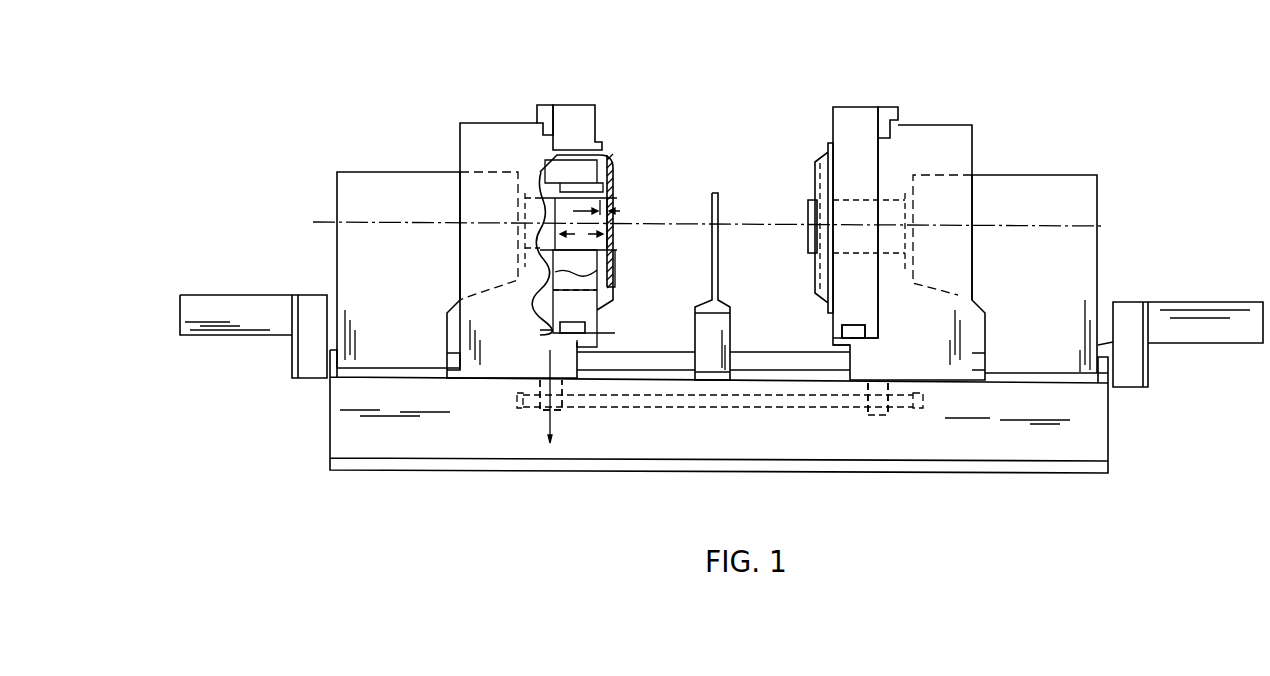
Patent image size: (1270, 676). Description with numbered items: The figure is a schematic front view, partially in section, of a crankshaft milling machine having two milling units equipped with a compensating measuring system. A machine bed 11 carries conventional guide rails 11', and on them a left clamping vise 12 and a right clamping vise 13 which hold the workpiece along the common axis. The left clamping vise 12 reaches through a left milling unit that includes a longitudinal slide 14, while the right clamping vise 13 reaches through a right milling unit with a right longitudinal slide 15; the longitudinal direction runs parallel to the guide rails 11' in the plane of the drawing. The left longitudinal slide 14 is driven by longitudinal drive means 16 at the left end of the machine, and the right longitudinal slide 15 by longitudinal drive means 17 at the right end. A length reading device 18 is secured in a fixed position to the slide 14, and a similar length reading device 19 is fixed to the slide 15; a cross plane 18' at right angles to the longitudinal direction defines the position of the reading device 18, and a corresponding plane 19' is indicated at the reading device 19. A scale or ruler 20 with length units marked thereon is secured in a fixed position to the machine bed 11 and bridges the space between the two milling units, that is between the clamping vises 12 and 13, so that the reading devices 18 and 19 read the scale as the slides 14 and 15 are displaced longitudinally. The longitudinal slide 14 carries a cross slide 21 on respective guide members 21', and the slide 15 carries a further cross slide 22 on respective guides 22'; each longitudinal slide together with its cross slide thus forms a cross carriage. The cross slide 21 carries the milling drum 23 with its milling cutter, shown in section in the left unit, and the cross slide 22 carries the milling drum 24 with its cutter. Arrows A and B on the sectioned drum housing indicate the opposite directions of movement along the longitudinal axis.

The machine bed 11 is at (719, 430).
The guide rails 11' is at (713, 343).
The left clamping vise 12 is at (368, 185).
The right clamping vise 13 is at (1057, 190).
The longitudinal slide 14 is at (485, 135).
The right longitudinal slide 15 is at (953, 135).
The longitudinal drive means 16 is at (237, 302).
The longitudinal drive means 17 is at (1197, 314).
The length reading device 18 is at (706, 428).
The cross plane 18' is at (561, 409).
The length reading device 19 is at (879, 438).
The right guide slide 19' is at (866, 414).
The scale or ruler 20 is at (728, 400).
The cross slide 21 is at (577, 201).
The guide members 21' is at (576, 195).
The cross slide 22 is at (855, 201).
The guides 22' is at (893, 219).
The milling drum 23 is at (598, 157).
The milling drum 24 is at (817, 280).
The axial movement direction A is at (615, 211).
The axial movement direction B is at (618, 237).